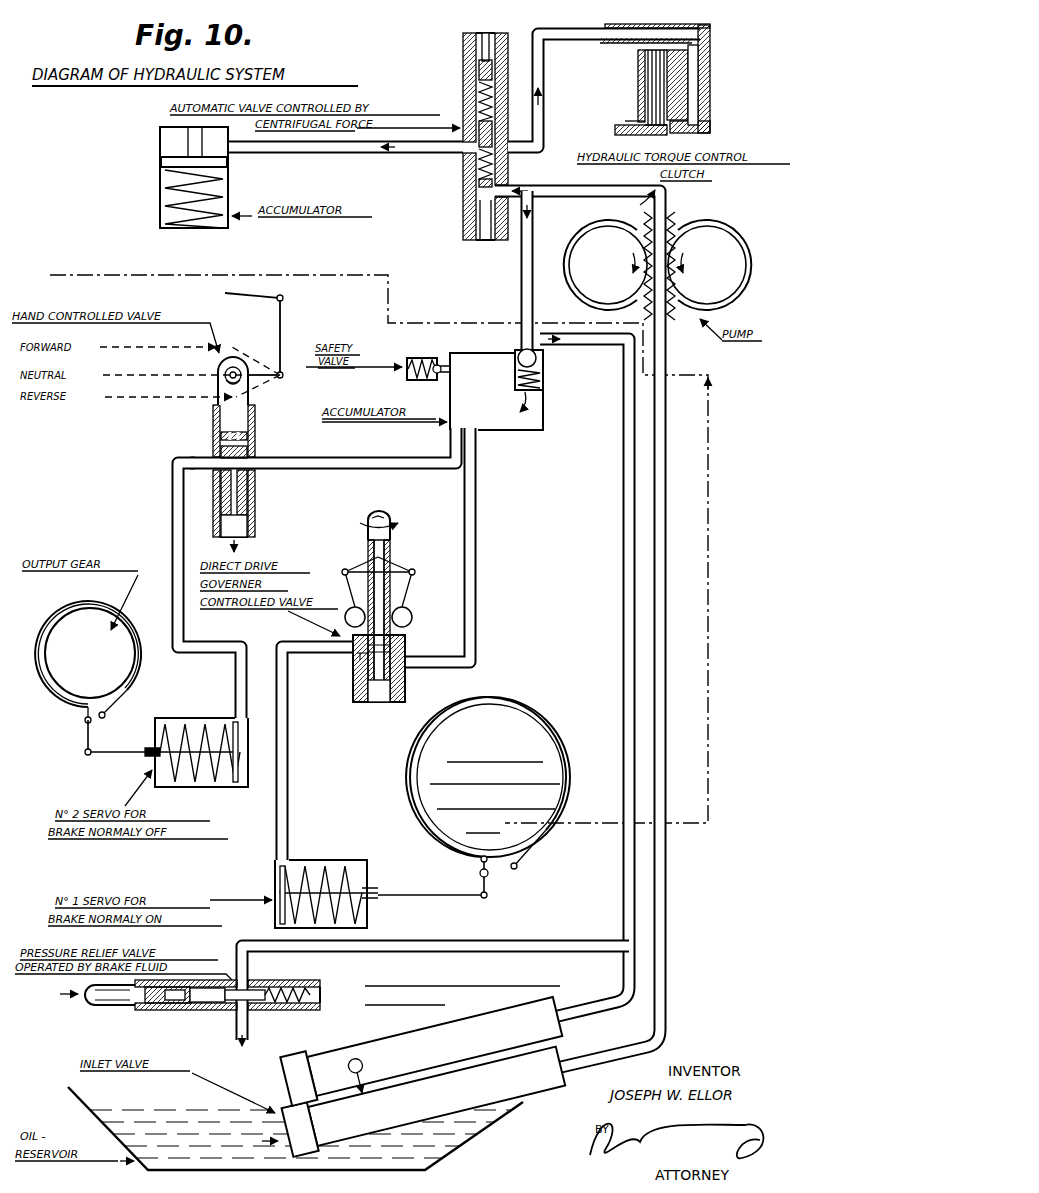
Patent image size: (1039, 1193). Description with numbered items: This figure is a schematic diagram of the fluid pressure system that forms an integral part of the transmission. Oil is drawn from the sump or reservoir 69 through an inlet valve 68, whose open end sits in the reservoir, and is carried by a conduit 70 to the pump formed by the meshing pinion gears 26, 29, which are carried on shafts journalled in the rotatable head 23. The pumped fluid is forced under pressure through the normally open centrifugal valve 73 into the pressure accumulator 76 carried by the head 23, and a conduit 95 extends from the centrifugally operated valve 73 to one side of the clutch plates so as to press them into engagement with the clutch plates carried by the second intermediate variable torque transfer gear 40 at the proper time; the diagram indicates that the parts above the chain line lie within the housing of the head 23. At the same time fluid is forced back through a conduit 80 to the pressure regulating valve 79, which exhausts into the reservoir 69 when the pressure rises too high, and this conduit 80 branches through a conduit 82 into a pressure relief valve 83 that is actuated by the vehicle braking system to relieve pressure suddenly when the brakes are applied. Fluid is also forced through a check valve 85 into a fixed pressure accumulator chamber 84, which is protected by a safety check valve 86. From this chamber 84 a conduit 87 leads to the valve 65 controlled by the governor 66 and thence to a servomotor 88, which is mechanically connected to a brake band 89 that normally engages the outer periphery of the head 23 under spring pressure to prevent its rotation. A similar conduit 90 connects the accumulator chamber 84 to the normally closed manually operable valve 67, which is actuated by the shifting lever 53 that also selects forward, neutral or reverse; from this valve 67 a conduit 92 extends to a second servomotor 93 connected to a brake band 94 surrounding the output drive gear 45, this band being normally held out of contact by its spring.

The head 23 is at (700, 28).
The second pinion gear 26 is at (608, 266).
The pinion gear 29 is at (709, 266).
The second intermediate variable torque transfer gear 40 is at (625, 102).
The output drive gear 45 is at (90, 653).
The lever 53 is at (283, 305).
The valve 65 is at (355, 683).
The governor 66 is at (413, 613).
The second valve 67 is at (255, 500).
The inlet valve 68 is at (490, 1116).
The oil sump or reservoir 69 is at (448, 1152).
The conduit 70 is at (667, 896).
The centrifugal valve 73 is at (463, 67).
The pressure accumulator 76 is at (160, 170).
The pressure regulating valve 79 is at (412, 1031).
The conduit 80 is at (623, 554).
The conduit 82 is at (549, 941).
The pressure relief valve 83 is at (208, 1010).
The fixed pressure accumulator chamber 84 is at (517, 432).
The check valve 85 is at (517, 352).
The safety check valve 86 is at (405, 373).
The conduit 87 is at (477, 582).
The servomotor 88 is at (334, 859).
The brake band 89 is at (411, 791).
The conduit 90 is at (330, 458).
The conduit 92 is at (172, 489).
The second servomotor 93 is at (206, 716).
The brake band 94 is at (40, 635).
The conduit 95 is at (573, 34).